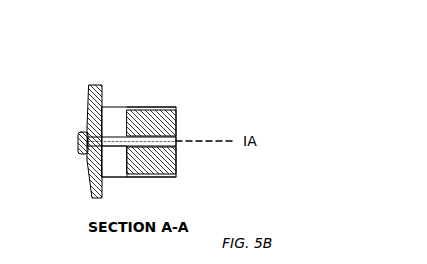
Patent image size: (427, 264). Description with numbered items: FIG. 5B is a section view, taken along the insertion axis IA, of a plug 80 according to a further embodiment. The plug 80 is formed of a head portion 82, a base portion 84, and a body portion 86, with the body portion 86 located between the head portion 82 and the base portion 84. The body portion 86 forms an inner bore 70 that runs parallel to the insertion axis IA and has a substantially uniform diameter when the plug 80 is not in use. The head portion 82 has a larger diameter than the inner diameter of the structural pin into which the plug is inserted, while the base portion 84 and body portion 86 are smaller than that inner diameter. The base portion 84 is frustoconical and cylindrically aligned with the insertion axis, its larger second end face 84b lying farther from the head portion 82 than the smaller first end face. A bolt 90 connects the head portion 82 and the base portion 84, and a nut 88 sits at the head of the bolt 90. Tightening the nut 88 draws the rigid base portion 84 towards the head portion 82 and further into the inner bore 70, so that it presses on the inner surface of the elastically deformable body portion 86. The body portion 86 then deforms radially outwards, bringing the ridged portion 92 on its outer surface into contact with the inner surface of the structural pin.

The inner bore 70 is at (112, 170).
The plug 80 is at (240, 104).
The head portion 82 is at (93, 196).
The base portion 84 is at (176, 116).
The second end face 84b is at (127, 130).
The body portion 86 is at (147, 107).
The nut 88 is at (78, 143).
The bolt 90 is at (108, 136).
The ridged portion 92 is at (147, 178).